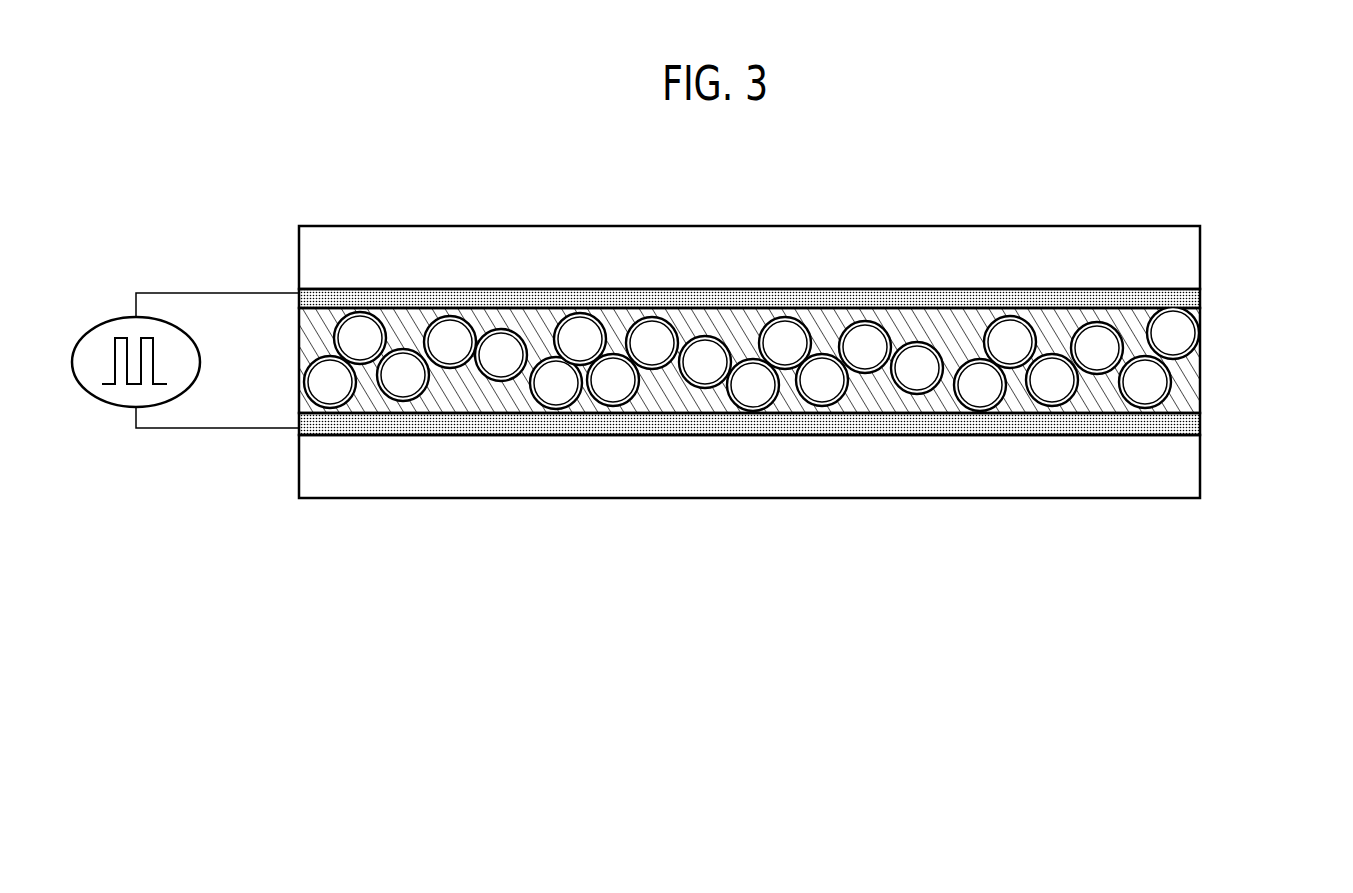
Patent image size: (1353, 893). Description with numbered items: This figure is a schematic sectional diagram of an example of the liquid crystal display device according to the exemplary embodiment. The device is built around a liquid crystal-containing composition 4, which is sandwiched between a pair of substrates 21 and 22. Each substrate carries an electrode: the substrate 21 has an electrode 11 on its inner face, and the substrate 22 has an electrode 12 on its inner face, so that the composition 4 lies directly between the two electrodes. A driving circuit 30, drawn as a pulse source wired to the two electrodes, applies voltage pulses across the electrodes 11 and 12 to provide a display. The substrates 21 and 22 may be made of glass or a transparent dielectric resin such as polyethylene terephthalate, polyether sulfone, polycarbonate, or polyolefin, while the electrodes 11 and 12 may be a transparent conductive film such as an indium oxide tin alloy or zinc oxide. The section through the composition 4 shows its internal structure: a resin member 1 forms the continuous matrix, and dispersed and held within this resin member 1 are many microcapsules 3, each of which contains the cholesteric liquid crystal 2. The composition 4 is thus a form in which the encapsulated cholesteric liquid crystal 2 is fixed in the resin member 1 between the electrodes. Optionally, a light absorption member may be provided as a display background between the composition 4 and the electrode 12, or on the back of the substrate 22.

The resin member 1 is at (1200, 408).
The cholesteric liquid crystal 2 is at (1145, 382).
The microcapsules 3 is at (1200, 372).
The liquid crystal-containing composition 4 is at (815, 380).
The electrode 11 is at (1200, 290).
The electrode 12 is at (1200, 428).
The substrate 21 is at (1190, 248).
The substrate 22 is at (1190, 475).
The driving circuit 30 is at (92, 395).